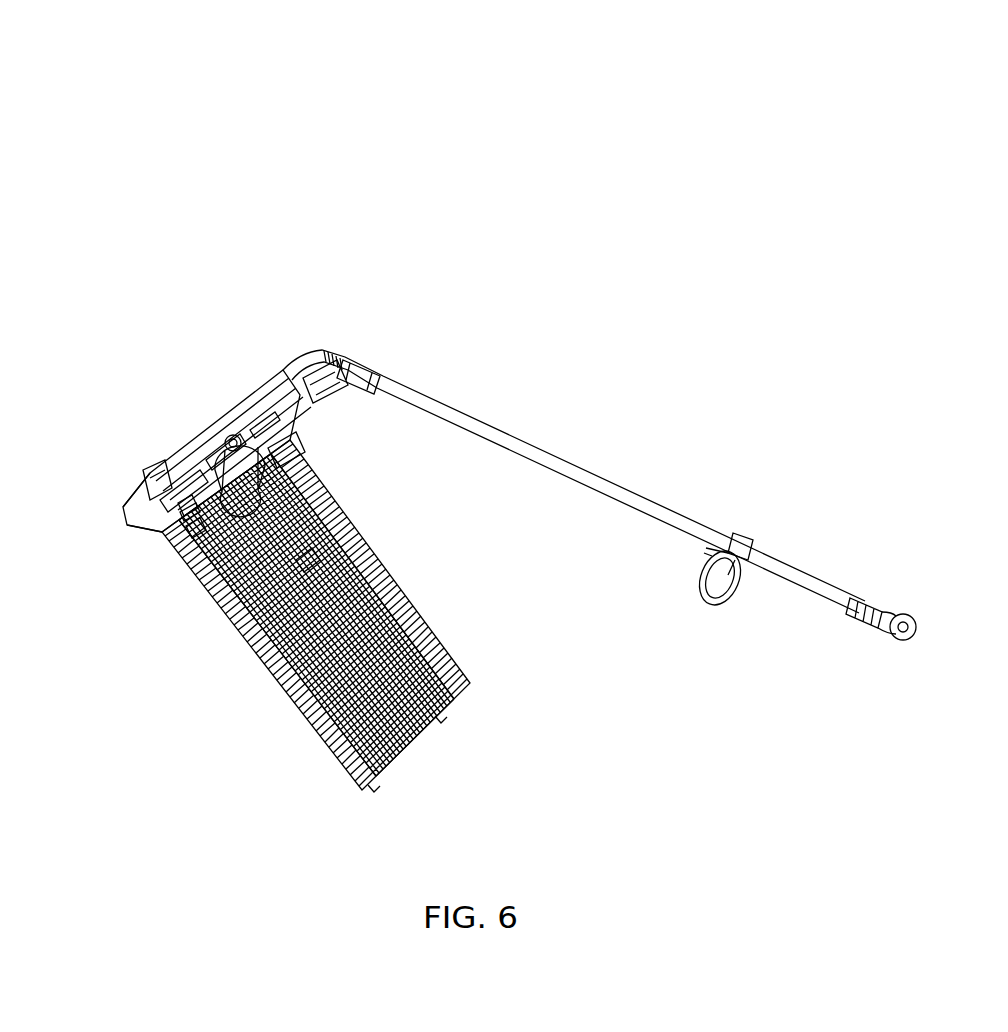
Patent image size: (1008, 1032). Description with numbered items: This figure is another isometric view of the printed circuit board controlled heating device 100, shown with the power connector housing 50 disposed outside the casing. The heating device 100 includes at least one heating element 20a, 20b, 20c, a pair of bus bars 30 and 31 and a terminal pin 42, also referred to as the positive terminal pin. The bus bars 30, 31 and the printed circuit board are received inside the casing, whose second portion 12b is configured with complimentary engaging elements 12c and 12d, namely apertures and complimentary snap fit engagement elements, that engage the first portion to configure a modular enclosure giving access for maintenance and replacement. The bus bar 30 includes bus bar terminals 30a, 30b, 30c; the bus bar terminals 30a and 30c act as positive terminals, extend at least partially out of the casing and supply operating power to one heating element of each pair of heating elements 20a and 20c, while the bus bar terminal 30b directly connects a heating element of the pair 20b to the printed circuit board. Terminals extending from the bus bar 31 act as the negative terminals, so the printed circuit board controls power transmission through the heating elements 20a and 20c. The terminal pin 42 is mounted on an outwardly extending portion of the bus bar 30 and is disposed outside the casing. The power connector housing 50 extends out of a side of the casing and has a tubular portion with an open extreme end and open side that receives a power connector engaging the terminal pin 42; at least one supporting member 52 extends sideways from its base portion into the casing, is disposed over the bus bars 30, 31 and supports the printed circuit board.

The heating device 100 is at (579, 229).
The terminal pin 42 is at (234, 440).
The bus bar 31 is at (247, 427).
The bus bar 30 is at (198, 455).
The supporting member 52 is at (210, 450).
The second portion 12b is at (125, 507).
The bus bar terminal 30c is at (277, 457).
The power connector housing 50 is at (263, 473).
The bus bar terminal 30b is at (305, 567).
The heating element 20c is at (407, 647).
The complimentary engaging element 12c is at (185, 511).
The complimentary engaging element 12d is at (187, 508).
The bus bar terminal 30a is at (195, 528).
The heating element 20a is at (235, 572).
The heating element 20b is at (392, 730).